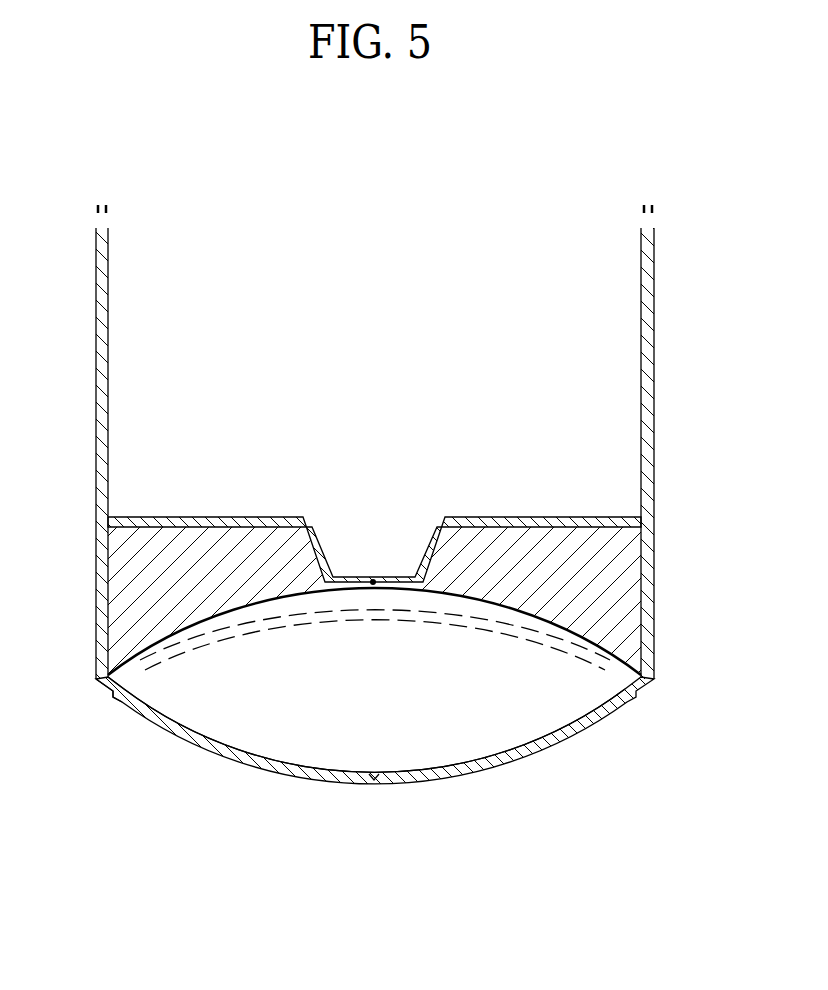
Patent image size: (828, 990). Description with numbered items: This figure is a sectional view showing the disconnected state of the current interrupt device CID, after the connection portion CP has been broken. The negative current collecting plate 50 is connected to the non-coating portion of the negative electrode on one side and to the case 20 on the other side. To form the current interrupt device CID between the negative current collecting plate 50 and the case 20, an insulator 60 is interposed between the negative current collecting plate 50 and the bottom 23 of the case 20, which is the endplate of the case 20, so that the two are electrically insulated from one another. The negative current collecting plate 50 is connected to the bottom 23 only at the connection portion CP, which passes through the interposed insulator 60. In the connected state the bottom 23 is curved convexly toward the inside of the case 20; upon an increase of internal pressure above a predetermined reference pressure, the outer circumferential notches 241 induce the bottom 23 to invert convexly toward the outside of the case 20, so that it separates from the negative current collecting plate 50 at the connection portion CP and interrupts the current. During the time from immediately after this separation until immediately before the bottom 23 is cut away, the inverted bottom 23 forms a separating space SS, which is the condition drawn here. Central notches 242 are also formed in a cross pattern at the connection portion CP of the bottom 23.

The case 20 is at (655, 313).
The bottom of the case 23 is at (489, 768).
The outer circumferential notches 241 is at (113, 700).
The central notches 242 is at (374, 782).
The negative current collecting plate 50 is at (221, 517).
The insulator 60 is at (125, 574).
The connection portion CP is at (373, 580).
The current interrupt device CID is at (412, 628).
The separating space SS is at (297, 740).